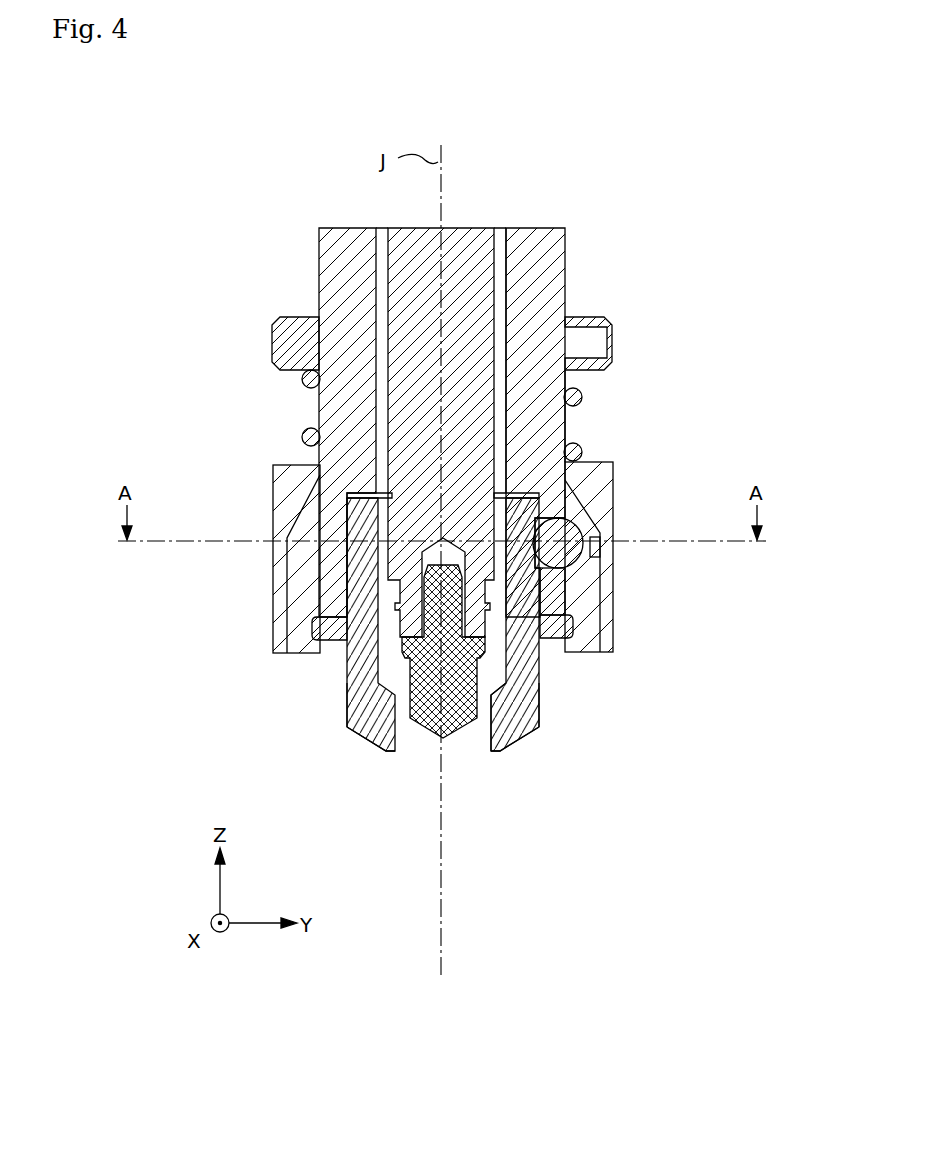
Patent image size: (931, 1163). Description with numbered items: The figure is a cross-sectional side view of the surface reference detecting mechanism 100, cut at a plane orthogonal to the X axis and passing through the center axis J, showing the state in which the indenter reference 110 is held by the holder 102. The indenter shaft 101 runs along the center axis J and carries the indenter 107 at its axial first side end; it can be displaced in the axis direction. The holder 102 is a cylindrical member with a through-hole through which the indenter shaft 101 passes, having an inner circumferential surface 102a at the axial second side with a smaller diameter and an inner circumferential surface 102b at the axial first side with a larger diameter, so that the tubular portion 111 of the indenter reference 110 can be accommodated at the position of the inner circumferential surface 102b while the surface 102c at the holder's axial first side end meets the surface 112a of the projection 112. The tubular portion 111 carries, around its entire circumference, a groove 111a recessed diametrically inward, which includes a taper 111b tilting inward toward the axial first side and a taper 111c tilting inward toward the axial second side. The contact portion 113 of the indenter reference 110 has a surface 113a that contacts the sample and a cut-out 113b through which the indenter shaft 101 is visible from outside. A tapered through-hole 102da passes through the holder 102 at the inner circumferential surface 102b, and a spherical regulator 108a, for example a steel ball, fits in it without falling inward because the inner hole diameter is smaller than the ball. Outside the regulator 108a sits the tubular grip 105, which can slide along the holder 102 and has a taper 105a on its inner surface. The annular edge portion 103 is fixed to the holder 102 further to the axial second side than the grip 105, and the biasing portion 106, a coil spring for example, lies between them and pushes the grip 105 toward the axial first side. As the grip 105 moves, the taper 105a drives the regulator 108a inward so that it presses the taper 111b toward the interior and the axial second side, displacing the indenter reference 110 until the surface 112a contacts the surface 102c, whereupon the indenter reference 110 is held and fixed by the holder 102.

The surface reference detecting mechanism 100 is at (596, 172).
The indenter shaft 101 is at (413, 262).
The holder 102 is at (546, 266).
The inner circumferential surface 102a is at (504, 300).
The inner circumferential surface 102b is at (565, 457).
The surface 102c is at (335, 639).
The through-hole 102da is at (554, 527).
The edge portion 103 is at (580, 330).
The grip 105 is at (594, 482).
The taper 105a is at (602, 548).
The biasing portion 106 is at (584, 397).
The indenter 107 is at (423, 727).
The regulator 108a is at (580, 546).
The indenter reference 110 is at (523, 723).
The tubular portion 111 is at (320, 462).
The groove 111a is at (355, 562).
The taper 111b is at (352, 530).
The taper 111c is at (353, 574).
The projection 112 is at (563, 636).
The surface 112a is at (570, 600).
The contact portion 113 is at (536, 704).
The surface 113a is at (395, 752).
The cut-out 113b is at (492, 751).